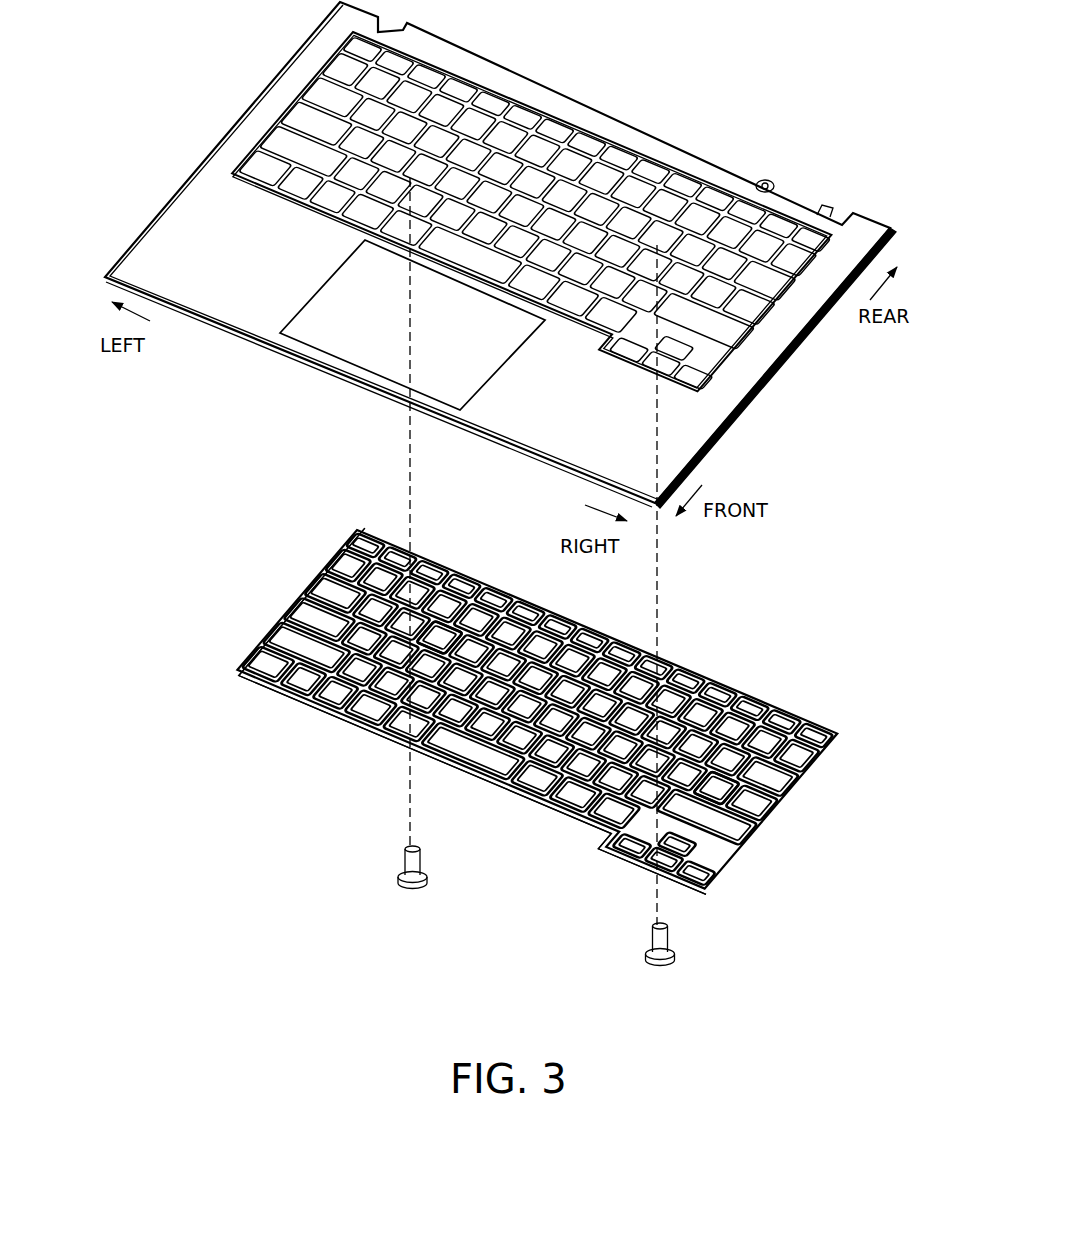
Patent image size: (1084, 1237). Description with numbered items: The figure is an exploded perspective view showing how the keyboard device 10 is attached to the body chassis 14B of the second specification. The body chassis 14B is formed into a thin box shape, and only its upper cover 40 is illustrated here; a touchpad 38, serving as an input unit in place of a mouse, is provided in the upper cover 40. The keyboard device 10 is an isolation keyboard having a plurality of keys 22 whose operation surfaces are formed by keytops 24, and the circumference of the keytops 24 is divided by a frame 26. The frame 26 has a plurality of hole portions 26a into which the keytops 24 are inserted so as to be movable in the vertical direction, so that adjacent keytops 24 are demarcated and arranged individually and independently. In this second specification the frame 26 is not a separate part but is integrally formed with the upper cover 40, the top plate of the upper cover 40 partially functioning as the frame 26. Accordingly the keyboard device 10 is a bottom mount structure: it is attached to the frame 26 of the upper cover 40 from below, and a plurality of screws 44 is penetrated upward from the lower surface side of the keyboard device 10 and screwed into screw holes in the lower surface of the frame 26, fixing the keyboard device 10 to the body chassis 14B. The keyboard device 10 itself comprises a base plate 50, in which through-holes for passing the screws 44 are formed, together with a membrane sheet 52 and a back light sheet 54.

The keyboard device 10 is at (534, 713).
The body chassis of the second specification 14B is at (500, 254).
The keys 22 is at (683, 705).
The keytops 24 is at (445, 635).
The frame 26 is at (560, 138).
The hole portions 26a is at (466, 100).
The touchpad 38 is at (393, 330).
The upper cover 40 is at (677, 423).
The screws 44 is at (428, 861).
The base plate 50 is at (333, 722).
The membrane sheet 52 is at (252, 690).
The back light sheet 54 is at (535, 711).